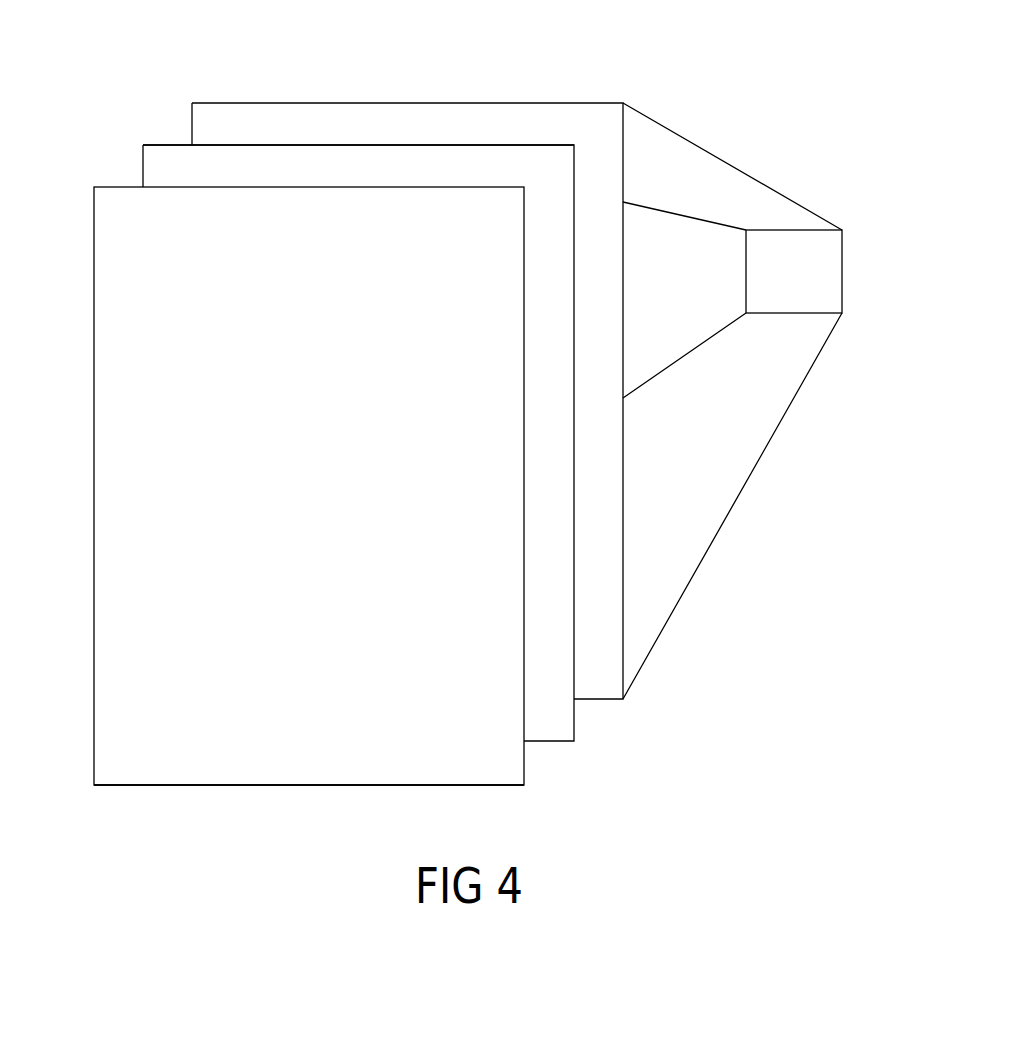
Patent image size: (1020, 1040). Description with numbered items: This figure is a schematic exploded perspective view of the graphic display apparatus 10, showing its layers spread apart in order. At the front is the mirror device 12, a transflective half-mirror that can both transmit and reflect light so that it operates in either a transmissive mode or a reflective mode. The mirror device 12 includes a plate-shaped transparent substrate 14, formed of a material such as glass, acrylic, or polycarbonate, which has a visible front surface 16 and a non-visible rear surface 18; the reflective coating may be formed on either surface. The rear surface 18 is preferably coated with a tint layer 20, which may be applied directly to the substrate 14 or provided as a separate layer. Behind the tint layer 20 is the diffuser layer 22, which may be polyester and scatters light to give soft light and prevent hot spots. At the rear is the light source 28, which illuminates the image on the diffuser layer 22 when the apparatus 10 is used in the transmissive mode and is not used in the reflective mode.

The graphic display apparatus 10 is at (775, 135).
The mirror device 12 is at (318, 785).
The transparent substrate 14 is at (442, 785).
The front surface 16 is at (113, 675).
The rear surface 18 is at (524, 762).
The tint layer 20 is at (167, 143).
The diffuser layer 22 is at (407, 102).
The light source 28 is at (842, 272).